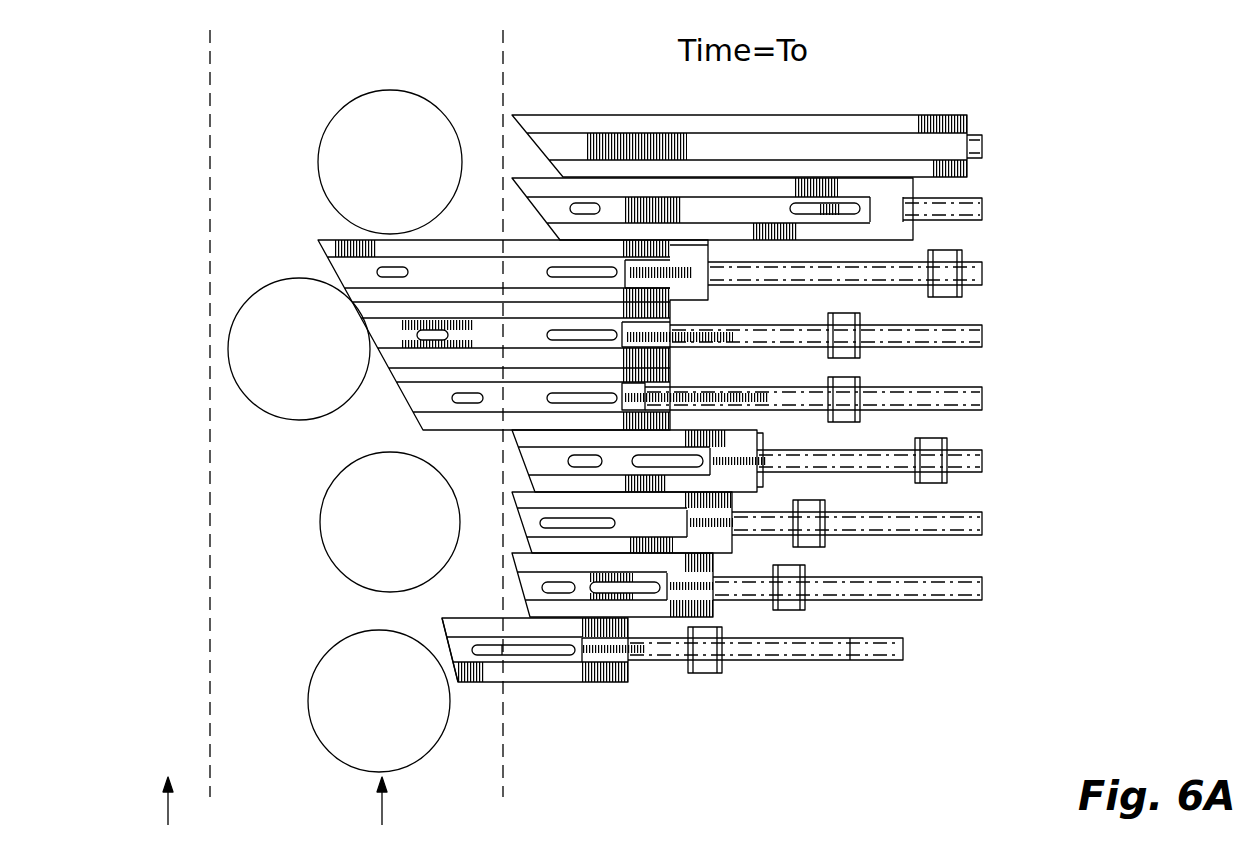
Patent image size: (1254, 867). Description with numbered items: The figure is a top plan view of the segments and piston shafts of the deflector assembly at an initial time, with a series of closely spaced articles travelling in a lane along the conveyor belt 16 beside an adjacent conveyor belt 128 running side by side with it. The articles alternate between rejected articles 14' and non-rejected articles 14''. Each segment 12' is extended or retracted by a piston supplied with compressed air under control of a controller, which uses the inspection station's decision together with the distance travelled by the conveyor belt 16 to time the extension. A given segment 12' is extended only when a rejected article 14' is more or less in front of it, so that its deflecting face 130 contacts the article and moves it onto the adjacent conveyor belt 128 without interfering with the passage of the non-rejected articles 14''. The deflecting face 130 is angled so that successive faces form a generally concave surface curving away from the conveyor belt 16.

The rejected article 14' is at (339, 525).
The non-rejected article 14'' is at (390, 341).
The segment 12' is at (672, 693).
The conveyor belt 16 is at (475, 723).
The adjacent conveyor belt 128 is at (180, 758).
The deflecting face 130 is at (447, 647).